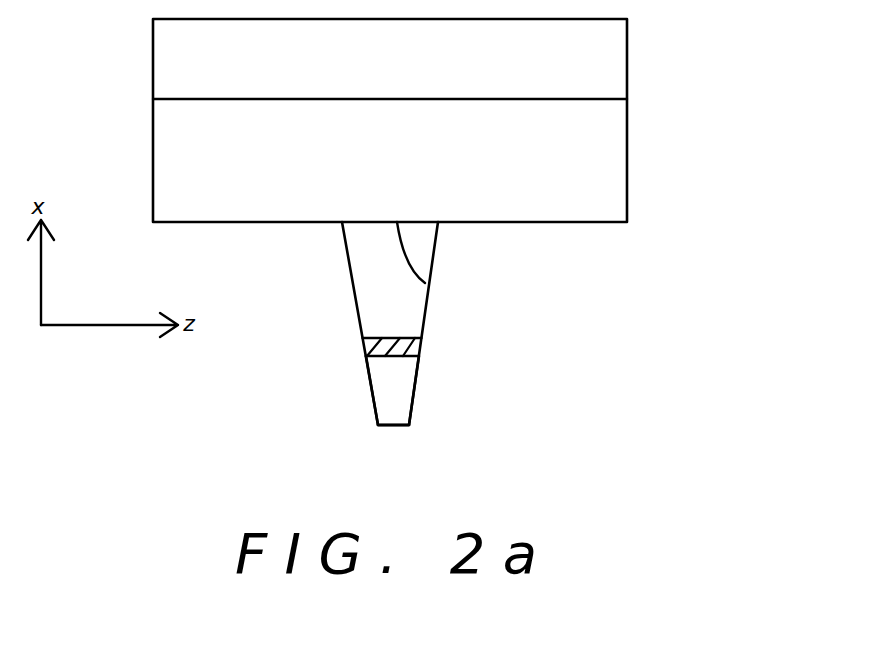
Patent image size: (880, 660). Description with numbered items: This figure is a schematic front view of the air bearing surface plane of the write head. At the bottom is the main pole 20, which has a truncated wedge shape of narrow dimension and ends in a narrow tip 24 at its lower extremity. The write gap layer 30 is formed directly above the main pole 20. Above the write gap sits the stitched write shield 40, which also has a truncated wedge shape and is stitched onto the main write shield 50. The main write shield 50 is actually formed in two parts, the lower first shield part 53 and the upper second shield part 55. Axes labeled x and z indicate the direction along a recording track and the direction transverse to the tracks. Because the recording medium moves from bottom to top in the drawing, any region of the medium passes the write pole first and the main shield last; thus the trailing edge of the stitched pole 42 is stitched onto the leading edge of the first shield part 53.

The main write shield 50 is at (401, 120).
The WS2 55 is at (178, 64).
The WS1 53 is at (178, 145).
The stitched write shield 40 is at (372, 264).
The trailing edge of the stitched pole 42 is at (425, 283).
The write gap layer 30 is at (420, 347).
The main pole 20 is at (402, 382).
The tip apex 24 is at (398, 425).